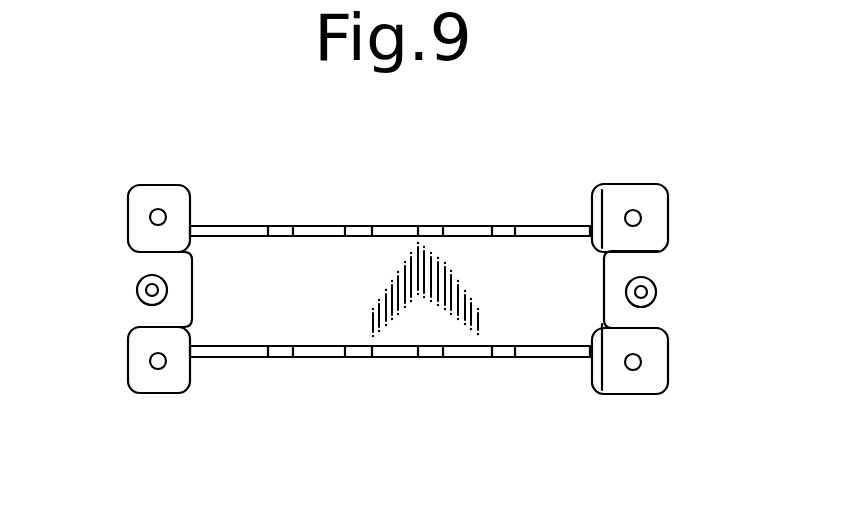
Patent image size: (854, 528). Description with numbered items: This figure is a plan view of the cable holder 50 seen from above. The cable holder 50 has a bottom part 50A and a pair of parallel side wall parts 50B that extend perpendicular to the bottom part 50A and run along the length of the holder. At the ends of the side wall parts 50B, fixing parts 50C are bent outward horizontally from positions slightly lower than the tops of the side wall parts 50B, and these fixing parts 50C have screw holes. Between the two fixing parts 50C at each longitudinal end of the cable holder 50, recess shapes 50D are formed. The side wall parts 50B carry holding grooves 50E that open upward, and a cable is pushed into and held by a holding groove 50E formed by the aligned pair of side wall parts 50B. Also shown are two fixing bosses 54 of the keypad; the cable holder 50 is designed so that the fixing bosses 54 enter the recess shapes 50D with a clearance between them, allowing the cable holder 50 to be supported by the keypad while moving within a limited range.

The cable holder 50 is at (552, 227).
The bottom part 50A is at (320, 285).
The side wall parts 50B is at (242, 227).
The fixing parts 50C is at (158, 193).
The recess shapes 50D is at (157, 253).
The holding grooves 50E is at (507, 227).
The fixing bosses 54 is at (138, 304).